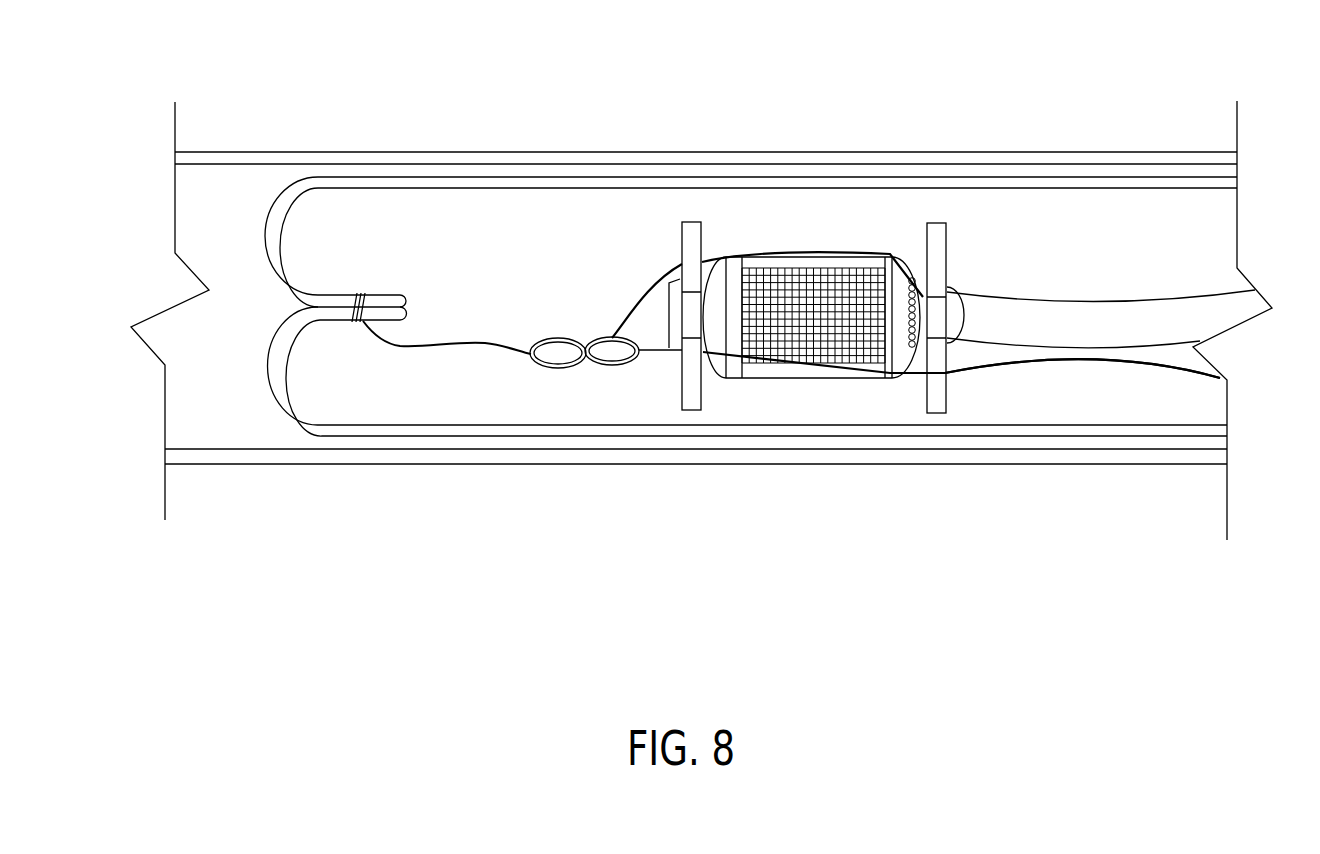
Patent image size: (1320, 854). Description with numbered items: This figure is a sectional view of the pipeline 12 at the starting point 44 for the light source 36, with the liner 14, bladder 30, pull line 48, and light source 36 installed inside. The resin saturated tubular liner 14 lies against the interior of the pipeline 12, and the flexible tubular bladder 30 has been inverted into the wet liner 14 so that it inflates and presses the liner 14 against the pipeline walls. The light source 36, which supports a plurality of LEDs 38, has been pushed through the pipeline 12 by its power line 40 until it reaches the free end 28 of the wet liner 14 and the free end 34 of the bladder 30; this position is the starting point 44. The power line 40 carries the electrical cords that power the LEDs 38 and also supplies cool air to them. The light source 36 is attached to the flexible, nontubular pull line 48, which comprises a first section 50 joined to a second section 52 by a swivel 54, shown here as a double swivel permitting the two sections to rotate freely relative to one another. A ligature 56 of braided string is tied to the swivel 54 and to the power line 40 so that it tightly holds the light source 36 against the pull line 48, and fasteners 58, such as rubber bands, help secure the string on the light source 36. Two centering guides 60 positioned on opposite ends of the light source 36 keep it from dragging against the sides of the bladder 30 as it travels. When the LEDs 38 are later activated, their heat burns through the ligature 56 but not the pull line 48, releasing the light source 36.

The pipeline 12 is at (313, 150).
The liner 14 is at (428, 172).
The free end of the liner 28 is at (383, 440).
The bladder 30 is at (597, 185).
The free end of the bladder 34 is at (363, 300).
The light source 36 is at (810, 372).
The LEDs 38 is at (807, 272).
The power line 40 is at (1117, 310).
The starting point 44 is at (827, 407).
The pull line 48 is at (1122, 366).
The first section 50 is at (508, 353).
The second section 52 is at (1015, 378).
The swivel 54 is at (587, 375).
The ligature 56 is at (642, 292).
The fasteners 58 is at (706, 257).
The centering guides 60 is at (932, 222).